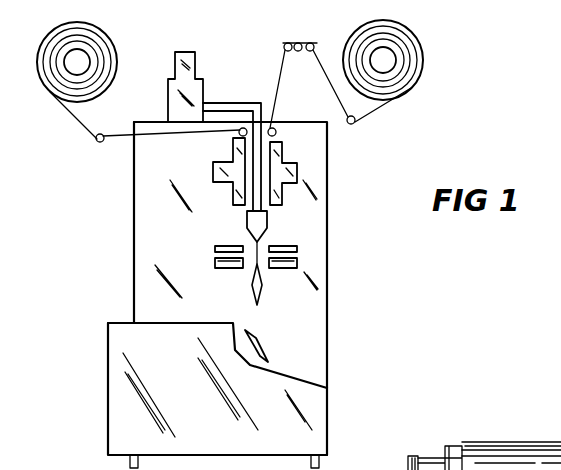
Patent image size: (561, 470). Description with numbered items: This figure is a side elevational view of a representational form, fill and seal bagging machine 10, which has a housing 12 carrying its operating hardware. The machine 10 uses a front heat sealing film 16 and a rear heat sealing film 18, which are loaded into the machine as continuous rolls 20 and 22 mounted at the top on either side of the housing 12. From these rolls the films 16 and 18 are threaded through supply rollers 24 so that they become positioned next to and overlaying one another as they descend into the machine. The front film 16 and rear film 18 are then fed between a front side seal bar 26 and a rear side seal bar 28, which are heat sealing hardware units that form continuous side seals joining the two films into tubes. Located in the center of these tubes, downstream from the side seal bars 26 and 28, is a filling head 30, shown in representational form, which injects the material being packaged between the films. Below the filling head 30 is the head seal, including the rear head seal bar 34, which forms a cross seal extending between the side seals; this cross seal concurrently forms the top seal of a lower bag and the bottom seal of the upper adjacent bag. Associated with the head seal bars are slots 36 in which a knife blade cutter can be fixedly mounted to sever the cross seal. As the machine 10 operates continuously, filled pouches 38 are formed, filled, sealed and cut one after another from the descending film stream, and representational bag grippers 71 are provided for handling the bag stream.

The machine 10 is at (386, 162).
The housing 12 is at (208, 410).
The front heat sealing film 16 is at (277, 73).
The rear heat sealing film 18 is at (84, 132).
The roll 20 is at (415, 57).
The roll 22 is at (110, 50).
The supply rollers 24 is at (104, 141).
The front side seal bar 26 is at (297, 172).
The rear side seal bar 28 is at (213, 182).
The filling head 30 is at (264, 213).
The rear head seal bar 34 is at (215, 266).
The slots 36 is at (215, 248).
The filled pouch 38 is at (268, 355).
The bag grippers 71 is at (271, 270).